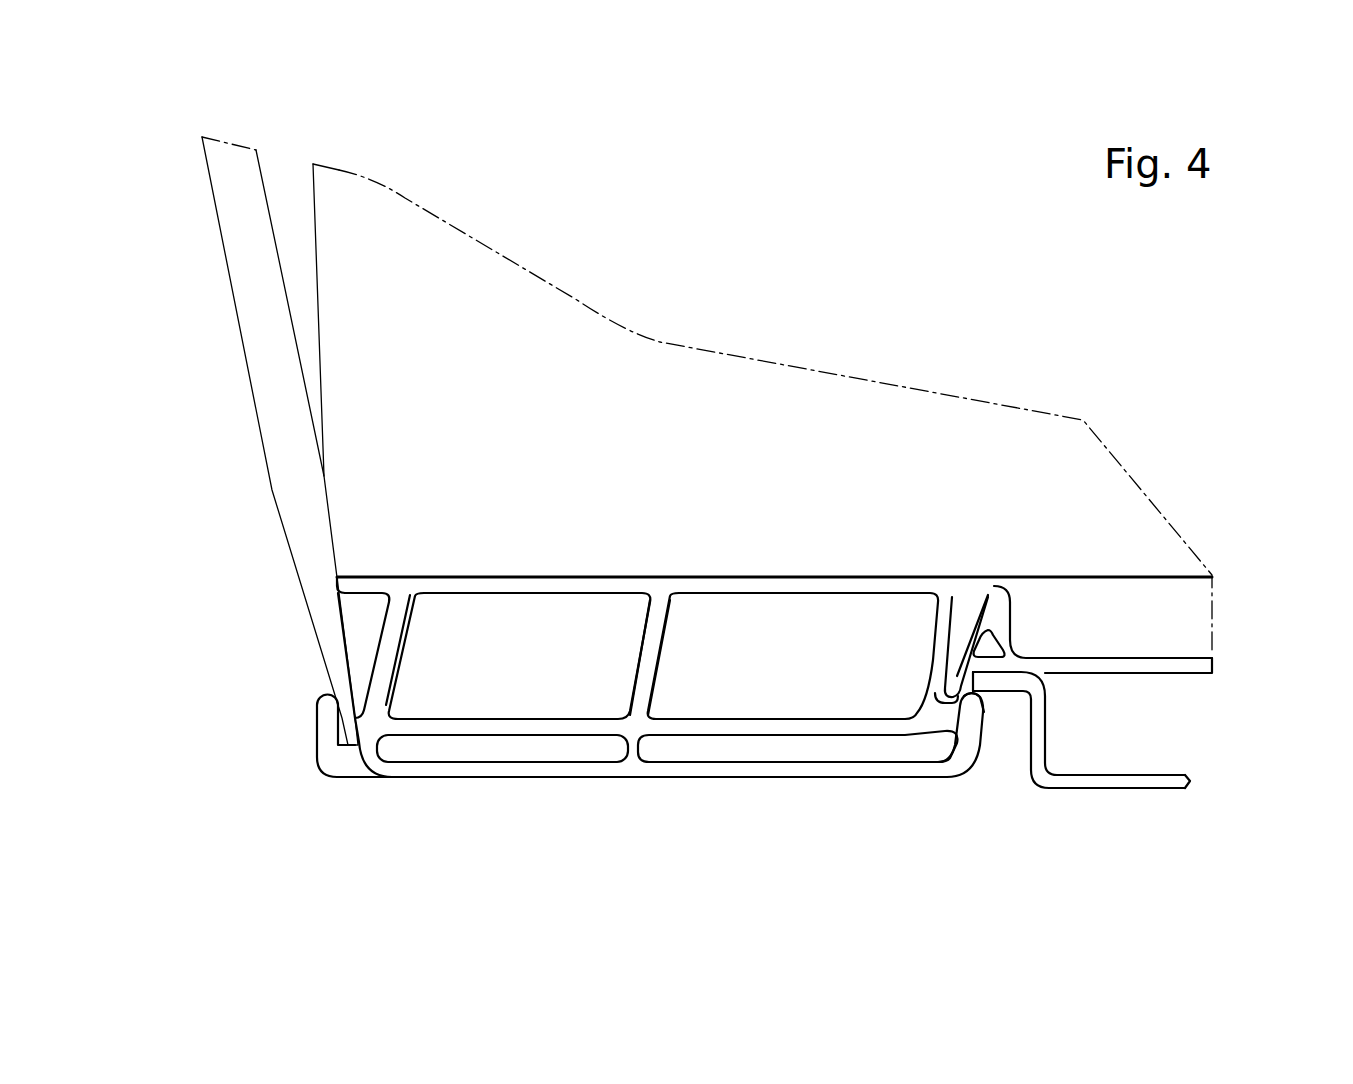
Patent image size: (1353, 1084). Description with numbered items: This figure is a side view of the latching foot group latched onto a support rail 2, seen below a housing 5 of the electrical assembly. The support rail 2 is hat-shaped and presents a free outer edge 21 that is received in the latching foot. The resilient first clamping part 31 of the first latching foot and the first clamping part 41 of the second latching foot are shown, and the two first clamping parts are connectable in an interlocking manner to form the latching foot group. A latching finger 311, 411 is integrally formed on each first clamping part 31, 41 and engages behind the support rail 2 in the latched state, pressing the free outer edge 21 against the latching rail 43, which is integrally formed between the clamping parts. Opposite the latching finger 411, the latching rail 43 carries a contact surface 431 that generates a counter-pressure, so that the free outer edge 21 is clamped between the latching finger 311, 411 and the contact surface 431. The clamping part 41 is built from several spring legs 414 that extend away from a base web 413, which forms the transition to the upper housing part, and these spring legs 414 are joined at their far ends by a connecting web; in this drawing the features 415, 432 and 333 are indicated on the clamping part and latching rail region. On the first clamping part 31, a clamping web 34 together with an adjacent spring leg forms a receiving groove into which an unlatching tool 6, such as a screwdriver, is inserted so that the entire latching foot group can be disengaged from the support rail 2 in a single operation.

The support rail 2 is at (1140, 782).
The free outer edge 21 is at (1040, 688).
The housing 5 is at (423, 272).
The unlatching tool 6 is at (248, 233).
The first clamping part 31 is at (358, 765).
The latching finger 311 is at (985, 705).
The bump 333 is at (950, 695).
The clamping web 34 is at (320, 716).
The first clamping part 41 is at (470, 770).
The latching finger 411 is at (955, 733).
The base web 413 is at (808, 590).
The spring leg 414 is at (386, 648).
The strut 415 is at (652, 640).
The latching rail 43 is at (1165, 663).
The contact surface 431 is at (986, 668).
The outer wall 432 is at (951, 688).